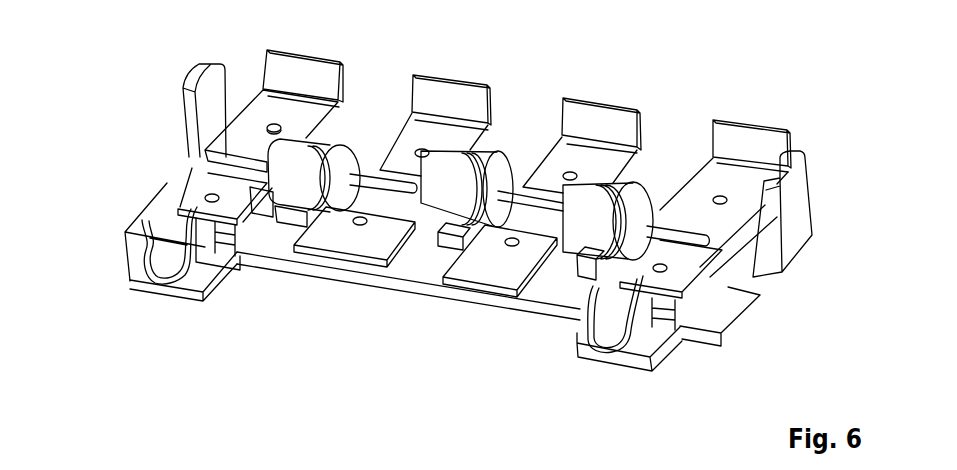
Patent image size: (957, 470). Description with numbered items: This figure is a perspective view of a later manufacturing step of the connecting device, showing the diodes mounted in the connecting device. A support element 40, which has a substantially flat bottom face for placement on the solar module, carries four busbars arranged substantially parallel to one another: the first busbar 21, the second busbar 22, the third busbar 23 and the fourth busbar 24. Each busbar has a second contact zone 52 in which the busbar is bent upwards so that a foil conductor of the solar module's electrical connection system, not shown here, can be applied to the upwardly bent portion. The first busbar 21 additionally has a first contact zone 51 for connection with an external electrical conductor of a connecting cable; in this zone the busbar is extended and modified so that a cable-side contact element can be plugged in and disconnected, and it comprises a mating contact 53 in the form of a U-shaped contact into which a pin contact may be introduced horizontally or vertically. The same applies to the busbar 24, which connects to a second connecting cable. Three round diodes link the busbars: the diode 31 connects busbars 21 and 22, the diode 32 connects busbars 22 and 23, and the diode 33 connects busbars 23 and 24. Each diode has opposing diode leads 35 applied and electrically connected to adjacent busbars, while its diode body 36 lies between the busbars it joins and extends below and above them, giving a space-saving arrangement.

The first busbar 21 is at (268, 118).
The second busbar 22 is at (344, 242).
The third busbar 23 is at (493, 267).
The fourth busbar 24 is at (713, 225).
The diode 31 is at (316, 155).
The diode 32 is at (462, 173).
The diode 33 is at (627, 172).
The diode lead 35 is at (540, 213).
The diode body 36 is at (448, 198).
The support element 40 is at (745, 312).
The first contact zone 51 is at (210, 227).
The second contact zone 52 is at (303, 73).
The mating contact 53 is at (142, 253).